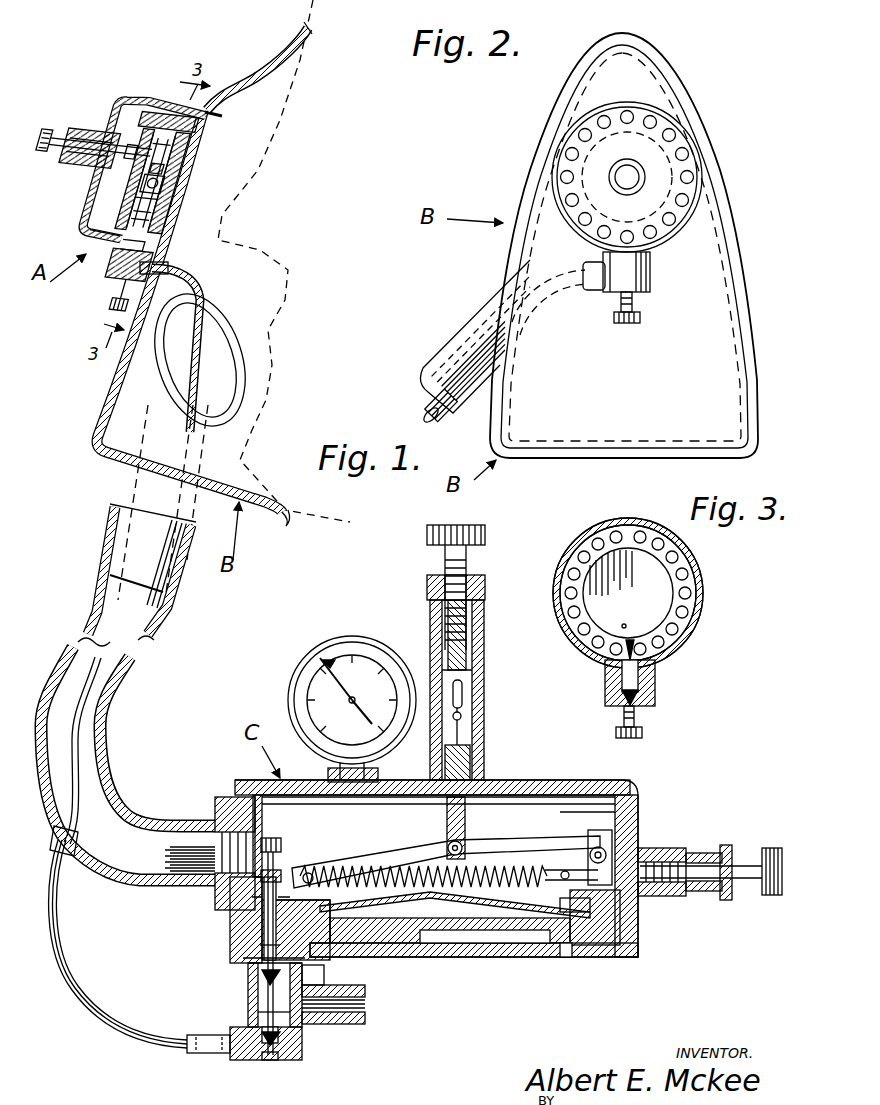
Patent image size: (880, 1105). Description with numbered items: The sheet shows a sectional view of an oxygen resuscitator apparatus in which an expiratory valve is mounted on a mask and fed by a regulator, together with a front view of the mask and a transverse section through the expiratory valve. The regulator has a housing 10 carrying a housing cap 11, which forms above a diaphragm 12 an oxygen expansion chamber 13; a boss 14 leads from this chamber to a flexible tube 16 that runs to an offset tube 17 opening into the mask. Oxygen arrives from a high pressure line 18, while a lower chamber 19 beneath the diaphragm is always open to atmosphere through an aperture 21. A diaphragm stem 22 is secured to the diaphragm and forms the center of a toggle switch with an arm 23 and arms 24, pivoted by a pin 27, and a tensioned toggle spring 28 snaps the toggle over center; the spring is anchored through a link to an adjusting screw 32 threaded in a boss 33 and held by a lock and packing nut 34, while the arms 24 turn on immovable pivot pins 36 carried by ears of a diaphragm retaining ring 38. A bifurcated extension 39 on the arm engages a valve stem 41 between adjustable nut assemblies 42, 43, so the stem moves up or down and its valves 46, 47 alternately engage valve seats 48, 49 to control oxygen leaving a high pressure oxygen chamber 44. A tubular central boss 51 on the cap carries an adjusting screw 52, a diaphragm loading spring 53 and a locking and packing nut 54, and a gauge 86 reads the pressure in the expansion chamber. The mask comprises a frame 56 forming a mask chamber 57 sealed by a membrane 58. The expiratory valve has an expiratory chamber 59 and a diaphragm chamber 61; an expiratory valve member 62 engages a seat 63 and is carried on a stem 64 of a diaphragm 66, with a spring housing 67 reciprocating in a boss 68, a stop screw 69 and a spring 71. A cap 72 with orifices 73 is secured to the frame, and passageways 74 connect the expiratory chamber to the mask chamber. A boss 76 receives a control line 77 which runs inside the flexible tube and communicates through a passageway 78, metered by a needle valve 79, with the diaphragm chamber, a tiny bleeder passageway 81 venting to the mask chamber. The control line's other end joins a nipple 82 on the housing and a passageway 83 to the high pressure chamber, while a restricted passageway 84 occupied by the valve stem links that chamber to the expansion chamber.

In FIG. 1, the housing 10 is at (640, 824).
In FIG. 1, the housing cap 11 is at (535, 780).
In FIG. 1, the diaphragm 12 is at (536, 922).
In FIG. 1, the oxygen expansion chamber 13 is at (582, 814).
In FIG. 1, the boss 14 is at (216, 894).
In FIG. 1, the flexible tube 16 is at (110, 780).
In FIG. 2, the flexible tube 16 is at (446, 352).
In FIG. 1, the offset tube 17 is at (136, 488).
In FIG. 1, the high pressure line 18 is at (362, 1010).
In FIG. 1, the lower chamber 19 is at (440, 948).
In FIG. 1, the aperture 21 is at (578, 950).
In FIG. 1, the diaphragm stem 22 is at (470, 814).
In FIG. 1, the arm 23 is at (400, 860).
In FIG. 1, the arms 24 is at (528, 852).
In FIG. 1, the pin 27 is at (462, 848).
In FIG. 1, the toggle spring 28 is at (542, 878).
In FIG. 1, the adjusting screw 32 is at (672, 898).
In FIG. 1, the boss 33 is at (674, 857).
In FIG. 1, the lock and packing nut 34 is at (724, 902).
In FIG. 1, the pivot pins 36 is at (628, 857).
In FIG. 1, the diaphragm retaining ring 38 is at (582, 914).
In FIG. 1, the bifurcated extension 39 is at (283, 872).
In FIG. 1, the valve stem 41 is at (262, 1001).
In FIG. 1, the adjustable nut assembly 42 is at (283, 852).
In FIG. 1, the adjustable nut assembly 43 is at (262, 900).
In FIG. 1, the high pressure oxygen chamber 44 is at (262, 990).
In FIG. 1, the valve 46 is at (312, 981).
In FIG. 1, the valve 47 is at (262, 1012).
In FIG. 1, the valve seat 48 is at (262, 958).
In FIG. 1, the valve seat 49 is at (300, 1042).
In FIG. 1, the tubular central boss 51 is at (484, 681).
In FIG. 1, the adjusting screw 52 is at (446, 556).
In FIG. 1, the diaphragm loading spring 53 is at (470, 762).
In FIG. 1, the locking and packing nut 54 is at (428, 586).
In FIG. 1, the frame 56 is at (100, 416).
In FIG. 2, the frame 56 is at (591, 440).
In FIG. 1, the mask chamber 57 is at (263, 72).
In FIG. 1, the membrane 58 is at (246, 470).
In FIG. 1, the expiratory chamber 59 is at (168, 108).
In FIG. 1, the diaphragm chamber 61 is at (190, 150).
In FIG. 1, the expiratory valve member 62 is at (146, 134).
In FIG. 1, the seat 63 is at (146, 118).
In FIG. 1, the stem 64 is at (104, 188).
In FIG. 1, the diaphragm 66 is at (180, 162).
In FIG. 1, the expiratory valve spring housing 67 is at (90, 168).
In FIG. 1, the boss 68 is at (90, 130).
In FIG. 1, the expiratory valve stop screw 69 is at (96, 163).
In FIG. 2, the expiratory valve stop screw 69 is at (633, 178).
In FIG. 1, the expiratory valve spring 71 is at (112, 150).
In FIG. 1, the cap 72 is at (108, 270).
In FIG. 2, the cap 72 is at (655, 258).
In FIG. 3, the cap 72 is at (701, 628).
In FIG. 1, the orifices 73 is at (86, 209).
In FIG. 2, the orifices 73 is at (689, 150).
In FIG. 1, the passageways 74 is at (207, 124).
In FIG. 3, the passageways 74 is at (676, 583).
In FIG. 1, the boss 76 is at (170, 266).
In FIG. 2, the boss 76 is at (592, 292).
In FIG. 1, the expiratory valve control line 77 is at (186, 281).
In FIG. 2, the expiratory valve control line 77 is at (424, 403).
In FIG. 1, the passageway 78 is at (165, 246).
In FIG. 3, the passageway 78 is at (631, 650).
In FIG. 1, the adjustable needle valve 79 is at (110, 306).
In FIG. 2, the adjustable needle valve 79 is at (642, 320).
In FIG. 3, the adjustable needle valve 79 is at (644, 733).
In FIG. 1, the passageway 81 is at (168, 212).
In FIG. 3, the passageway 81 is at (621, 624).
In FIG. 1, the nipple 82 is at (216, 1054).
In FIG. 1, the passageway 83 is at (270, 1060).
In FIG. 1, the passageway 84 is at (262, 946).
In FIG. 1, the gauge 86 is at (290, 700).